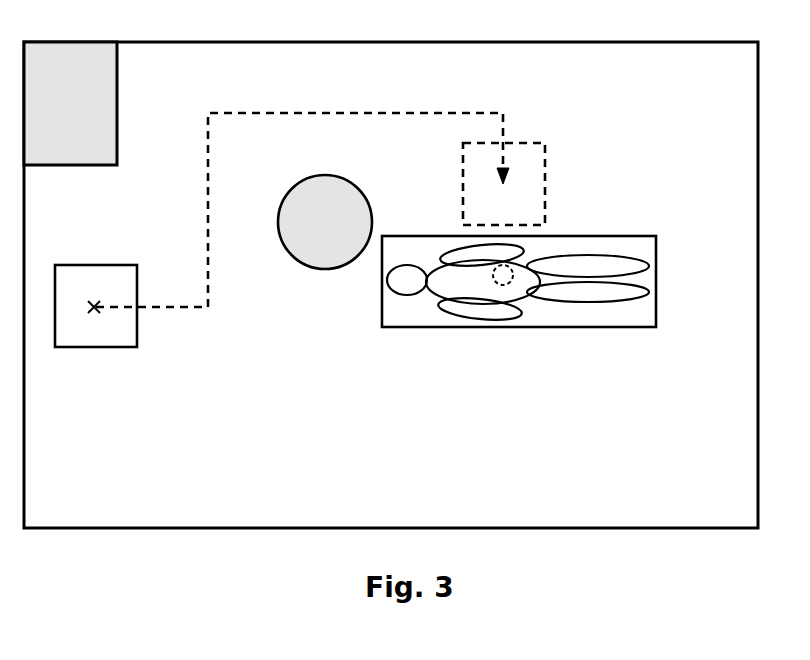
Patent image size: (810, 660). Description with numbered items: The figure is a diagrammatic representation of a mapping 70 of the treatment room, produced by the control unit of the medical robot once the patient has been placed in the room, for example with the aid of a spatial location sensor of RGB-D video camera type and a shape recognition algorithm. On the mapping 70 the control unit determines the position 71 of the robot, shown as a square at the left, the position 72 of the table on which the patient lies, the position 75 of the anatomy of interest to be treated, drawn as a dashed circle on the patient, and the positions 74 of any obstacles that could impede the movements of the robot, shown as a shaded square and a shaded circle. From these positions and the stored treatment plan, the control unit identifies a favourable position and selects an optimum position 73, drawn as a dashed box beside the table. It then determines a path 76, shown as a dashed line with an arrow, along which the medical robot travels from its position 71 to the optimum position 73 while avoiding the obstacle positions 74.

The mapping 70 is at (222, 528).
The position of the robot 71 is at (100, 347).
The position of the table 72 is at (428, 327).
The optimum position 73 is at (545, 175).
The positions of obstacles 74 is at (117, 73).
The position of the anatomy of interest 75 is at (510, 283).
The path 76 is at (412, 113).